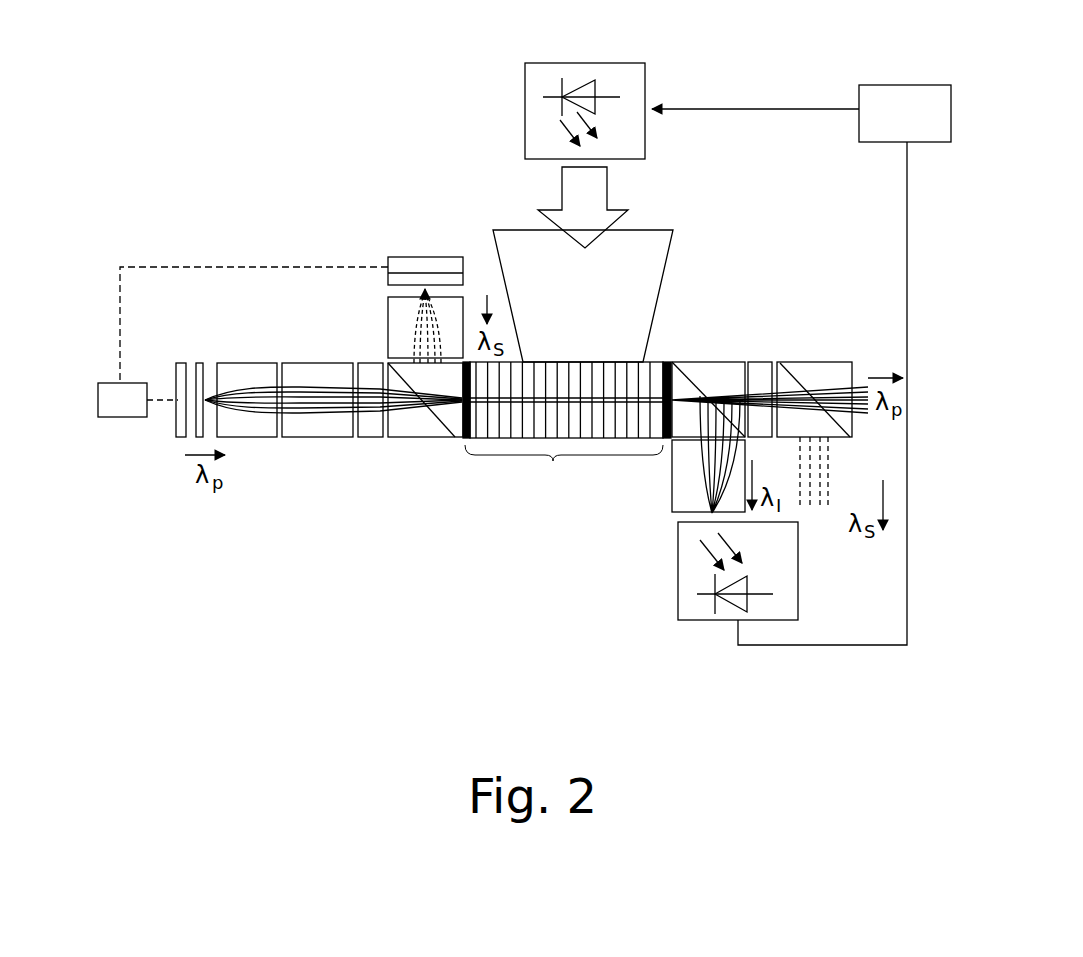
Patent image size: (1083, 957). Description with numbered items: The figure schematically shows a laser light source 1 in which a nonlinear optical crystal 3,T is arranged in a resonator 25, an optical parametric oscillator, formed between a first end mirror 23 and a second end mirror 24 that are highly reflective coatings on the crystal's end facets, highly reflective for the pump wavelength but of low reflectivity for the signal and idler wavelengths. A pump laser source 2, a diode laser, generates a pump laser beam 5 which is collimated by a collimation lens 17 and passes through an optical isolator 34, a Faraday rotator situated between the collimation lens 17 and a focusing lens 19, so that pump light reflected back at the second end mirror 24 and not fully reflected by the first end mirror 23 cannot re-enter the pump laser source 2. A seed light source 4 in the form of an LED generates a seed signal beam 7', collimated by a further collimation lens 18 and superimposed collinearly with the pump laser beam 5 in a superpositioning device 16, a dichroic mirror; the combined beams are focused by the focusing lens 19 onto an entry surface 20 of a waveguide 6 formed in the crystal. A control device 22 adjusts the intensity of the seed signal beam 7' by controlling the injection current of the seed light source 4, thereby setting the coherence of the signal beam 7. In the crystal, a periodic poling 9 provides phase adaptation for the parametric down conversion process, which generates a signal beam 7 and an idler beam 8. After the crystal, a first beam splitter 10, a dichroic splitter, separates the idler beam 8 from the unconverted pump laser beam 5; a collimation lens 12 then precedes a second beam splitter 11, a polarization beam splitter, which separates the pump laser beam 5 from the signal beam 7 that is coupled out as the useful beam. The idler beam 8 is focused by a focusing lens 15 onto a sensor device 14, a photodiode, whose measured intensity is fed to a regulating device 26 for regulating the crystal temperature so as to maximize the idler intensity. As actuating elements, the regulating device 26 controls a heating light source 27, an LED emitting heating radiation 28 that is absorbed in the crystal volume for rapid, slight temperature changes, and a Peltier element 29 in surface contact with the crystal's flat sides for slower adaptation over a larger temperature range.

The laser light source 1 is at (272, 245).
The pump laser source 2 is at (184, 418).
The nonlinear optical crystal 3,T is at (606, 296).
The seed light source 4 is at (407, 262).
The pump laser beam 5 is at (242, 383).
The waveguide 6 is at (590, 362).
The signal beam 7 is at (840, 471).
The seed signal beam 7' is at (393, 327).
The idler beam 8 is at (692, 460).
The periodic poling 9 is at (533, 362).
The first beam splitter 10 is at (721, 362).
The second beam splitter 11 is at (830, 362).
The collimation lens 12 is at (766, 362).
The sensor device 14 is at (697, 582).
The focusing lens 15 is at (682, 495).
The superpositioning device 16 is at (405, 440).
The collimation lens 17 is at (240, 440).
The further collimation lens 18 is at (396, 310).
The focusing lens 19 is at (369, 440).
The entry surface 20 is at (450, 440).
The control device 22 is at (130, 418).
The first end mirror 23 is at (466, 355).
The second end mirror 24 is at (668, 365).
The resonator 25 is at (564, 466).
The regulating device 26 is at (900, 110).
The heating light source 27 is at (612, 84).
The heating radiation 28 is at (628, 243).
The Peltier element 29 is at (649, 362).
The optical isolator 34 is at (302, 440).